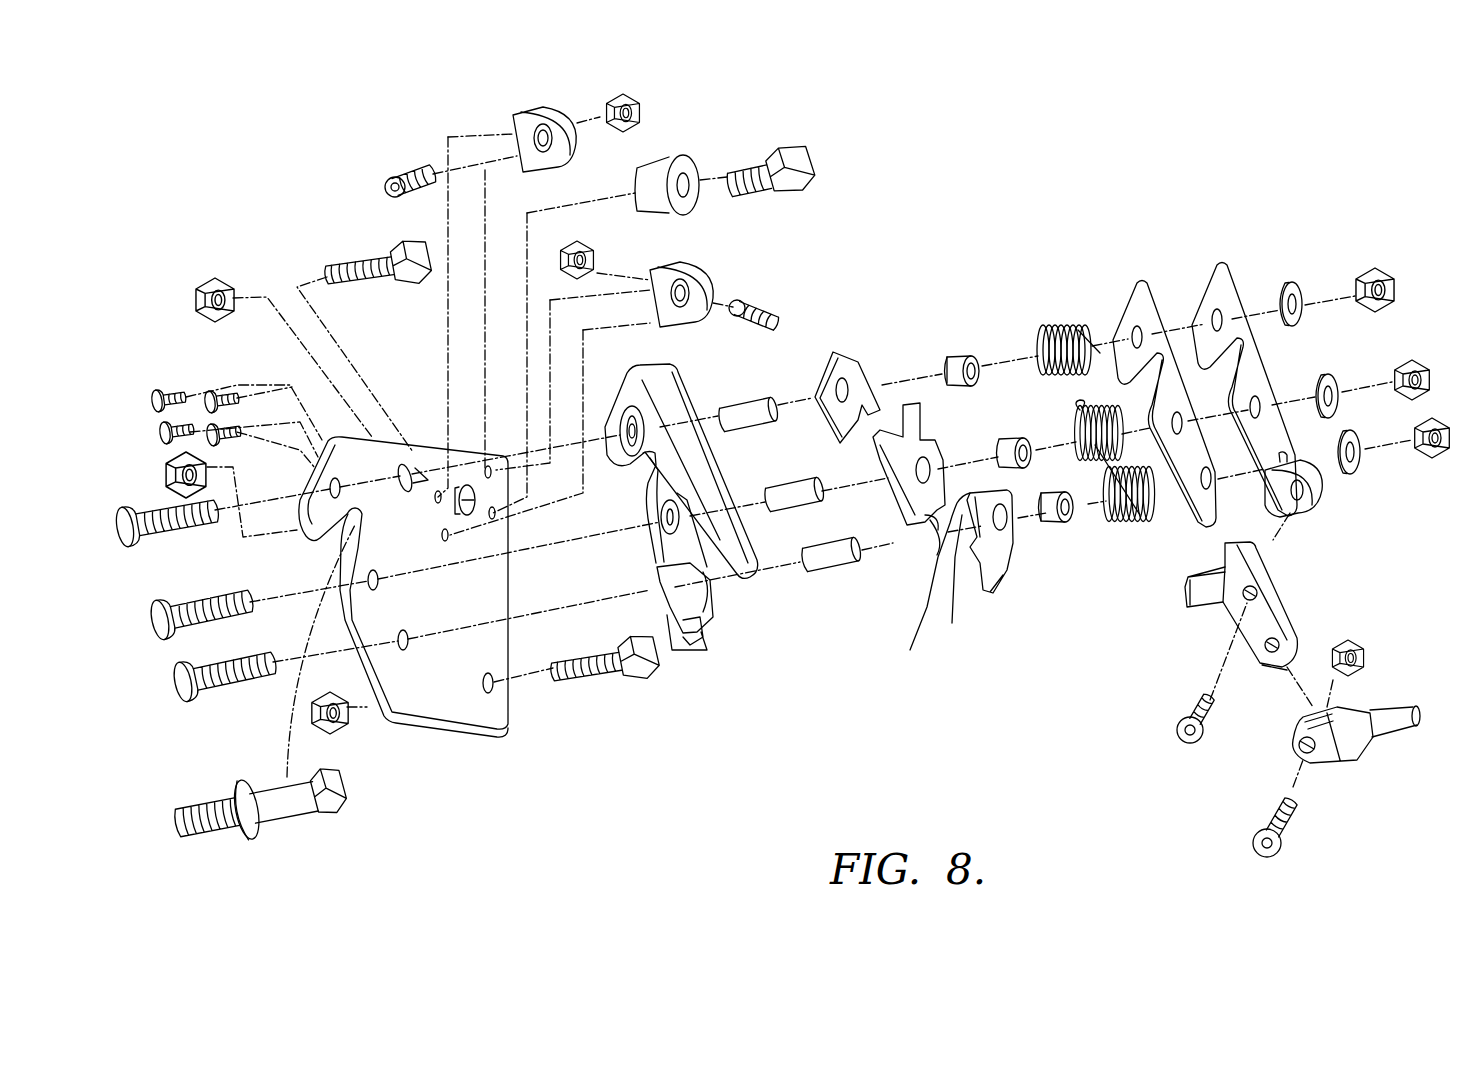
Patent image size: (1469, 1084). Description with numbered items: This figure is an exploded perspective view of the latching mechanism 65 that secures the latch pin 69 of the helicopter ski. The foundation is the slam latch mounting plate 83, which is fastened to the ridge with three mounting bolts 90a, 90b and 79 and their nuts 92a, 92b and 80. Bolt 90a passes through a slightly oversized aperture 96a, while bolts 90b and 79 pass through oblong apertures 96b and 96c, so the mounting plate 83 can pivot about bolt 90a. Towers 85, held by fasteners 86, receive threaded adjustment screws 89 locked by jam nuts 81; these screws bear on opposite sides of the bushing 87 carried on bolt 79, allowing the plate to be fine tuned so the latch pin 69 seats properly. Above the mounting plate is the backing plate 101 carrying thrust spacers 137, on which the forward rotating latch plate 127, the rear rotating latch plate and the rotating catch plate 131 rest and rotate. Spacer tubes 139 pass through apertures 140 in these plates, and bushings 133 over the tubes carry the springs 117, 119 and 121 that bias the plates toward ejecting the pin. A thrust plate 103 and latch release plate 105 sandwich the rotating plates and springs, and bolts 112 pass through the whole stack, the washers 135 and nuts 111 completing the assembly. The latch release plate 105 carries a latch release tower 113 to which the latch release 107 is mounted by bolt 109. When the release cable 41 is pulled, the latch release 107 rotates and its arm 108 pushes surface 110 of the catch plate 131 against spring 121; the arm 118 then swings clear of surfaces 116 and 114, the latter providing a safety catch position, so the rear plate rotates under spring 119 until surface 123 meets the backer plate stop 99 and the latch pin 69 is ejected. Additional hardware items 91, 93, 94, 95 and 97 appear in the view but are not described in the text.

The release cable 41 is at (1393, 720).
The latching mechanism 65 is at (1250, 160).
The latch pin 69 is at (364, 822).
The mounting bolt 79 is at (820, 157).
The nut 80 is at (166, 470).
The jam nuts 81 is at (622, 96).
The slam latch mounting plate 83 is at (466, 617).
The towers 85 is at (573, 117).
The fasteners 86 is at (205, 395).
The bushing 87 is at (683, 157).
The adjustment screws 89 is at (412, 168).
The mounting bolt 90a is at (637, 663).
The mounting bolt 90b is at (412, 245).
The clamp block 91 is at (1353, 737).
The nut 92a is at (330, 728).
The nut 92b is at (198, 297).
The screw 93 is at (1297, 843).
The nut 94 is at (1365, 655).
The pivot bolt 95 is at (297, 805).
The aperture 96a is at (493, 685).
The oblong aperture 96b is at (468, 515).
The oblong aperture 96c is at (412, 472).
The washer 97 is at (210, 830).
The backer plate stop 99 is at (673, 640).
The backing plate 101 is at (703, 634).
The thrust plate 103 is at (1143, 307).
The latch release plate 105 is at (1228, 297).
The latch release 107 is at (1280, 620).
The arm 108 is at (1187, 597).
The bolt 109 is at (1178, 731).
The surface 110 is at (952, 624).
The nuts 111 is at (1448, 418).
The bolts 112 is at (173, 690).
The latch release tower 113 is at (1313, 503).
The surface 114 is at (934, 527).
The surface 116 is at (937, 550).
The spring 117 is at (1053, 323).
The arm 118 is at (912, 645).
The spring 119 is at (1077, 423).
The spring 121 is at (1130, 527).
The surface 123 is at (890, 495).
The forward rotating latch plate 127 is at (850, 357).
The rotating catch plate 131 is at (993, 578).
The bushings 133 is at (1058, 487).
The washers 135 is at (1358, 432).
The thrust spacers 137 is at (640, 418).
The spacer tubes 139 is at (793, 490).
The apertures 140 is at (845, 385).